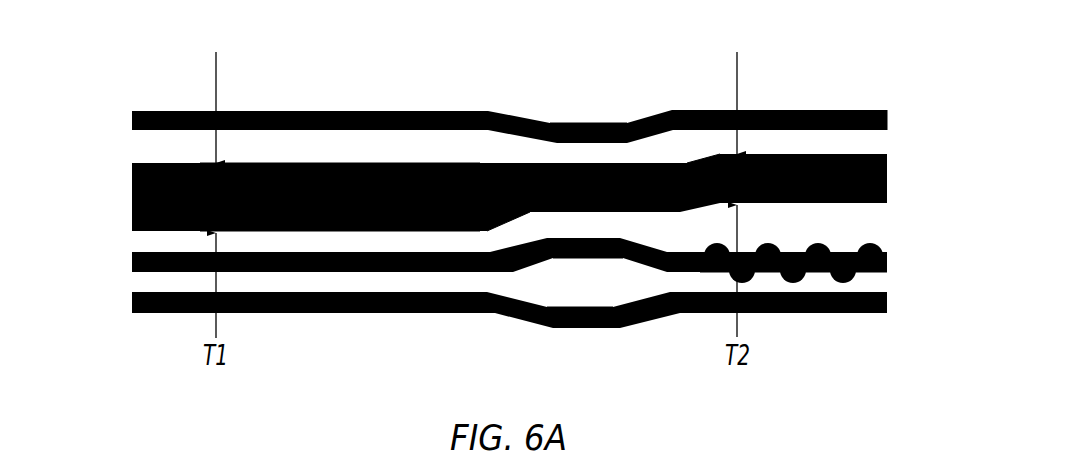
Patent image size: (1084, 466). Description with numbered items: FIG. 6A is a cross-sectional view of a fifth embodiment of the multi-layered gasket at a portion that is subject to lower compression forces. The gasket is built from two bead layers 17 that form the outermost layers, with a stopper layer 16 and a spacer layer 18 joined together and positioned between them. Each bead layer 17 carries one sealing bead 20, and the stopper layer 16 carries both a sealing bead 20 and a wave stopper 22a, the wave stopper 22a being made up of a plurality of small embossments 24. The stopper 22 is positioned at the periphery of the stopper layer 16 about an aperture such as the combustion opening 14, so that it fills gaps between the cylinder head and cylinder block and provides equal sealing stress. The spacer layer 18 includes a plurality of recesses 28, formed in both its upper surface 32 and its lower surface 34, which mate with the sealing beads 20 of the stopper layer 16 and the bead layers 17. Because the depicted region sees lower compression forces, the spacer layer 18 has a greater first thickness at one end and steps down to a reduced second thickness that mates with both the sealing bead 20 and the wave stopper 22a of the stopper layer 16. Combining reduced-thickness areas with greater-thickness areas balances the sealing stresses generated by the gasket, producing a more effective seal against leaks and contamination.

The combustion opening 14 is at (919, 168).
The stopper layer 16 is at (130, 260).
The bead layer 17 is at (130, 128).
The spacer layer 18 is at (130, 192).
The sealing bead 20 is at (577, 123).
The stopper 22 is at (838, 242).
The wave stopper 22a is at (885, 262).
The small embossments 24 is at (784, 283).
The recesses 28 is at (537, 218).
The upper surface 32 is at (347, 163).
The lower surface 34 is at (350, 232).